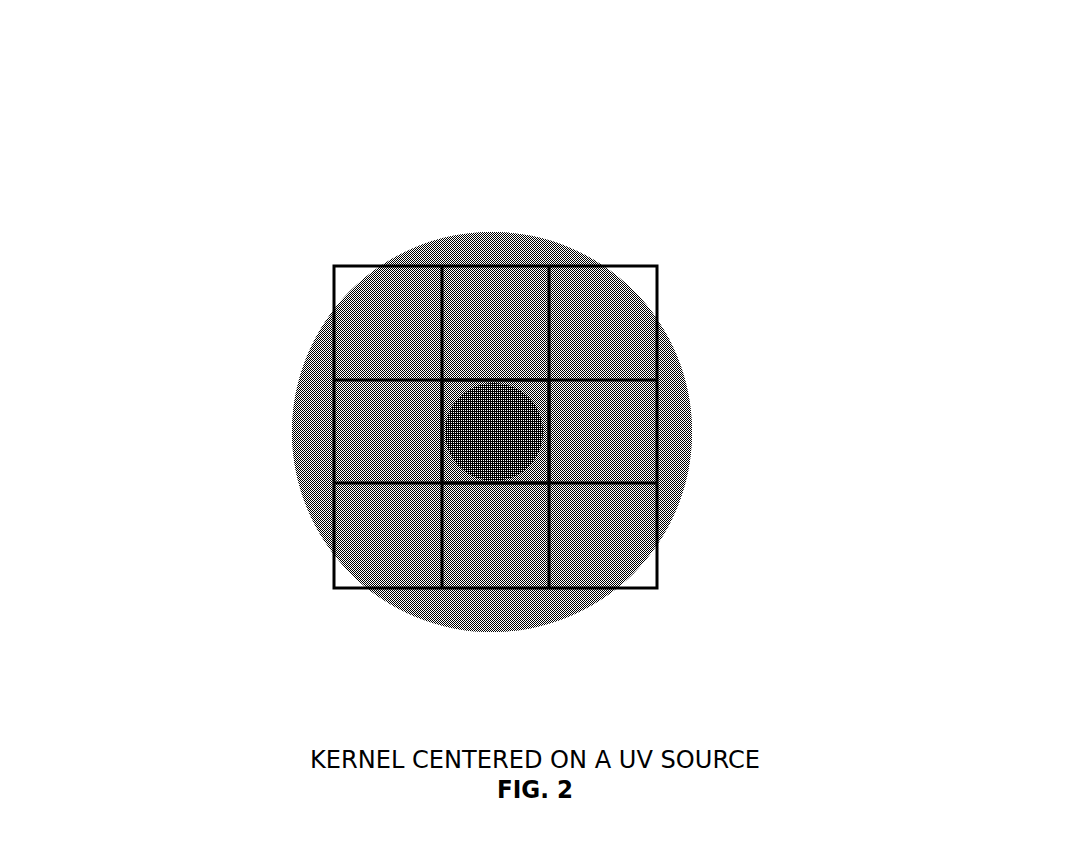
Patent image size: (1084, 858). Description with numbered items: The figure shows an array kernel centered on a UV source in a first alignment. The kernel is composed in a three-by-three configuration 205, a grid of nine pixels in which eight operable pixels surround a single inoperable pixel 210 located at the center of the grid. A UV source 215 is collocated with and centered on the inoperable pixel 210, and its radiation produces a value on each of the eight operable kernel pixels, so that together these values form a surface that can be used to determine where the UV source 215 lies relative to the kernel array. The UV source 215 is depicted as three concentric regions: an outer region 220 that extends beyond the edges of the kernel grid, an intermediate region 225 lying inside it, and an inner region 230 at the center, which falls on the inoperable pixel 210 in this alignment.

The 3×3 configuration 205 is at (360, 264).
The inoperable pixel 210 is at (463, 378).
The UV source 215 is at (302, 366).
The outer region 220 is at (517, 236).
The intermediate region 225 is at (530, 312).
The inner region 230 is at (535, 399).